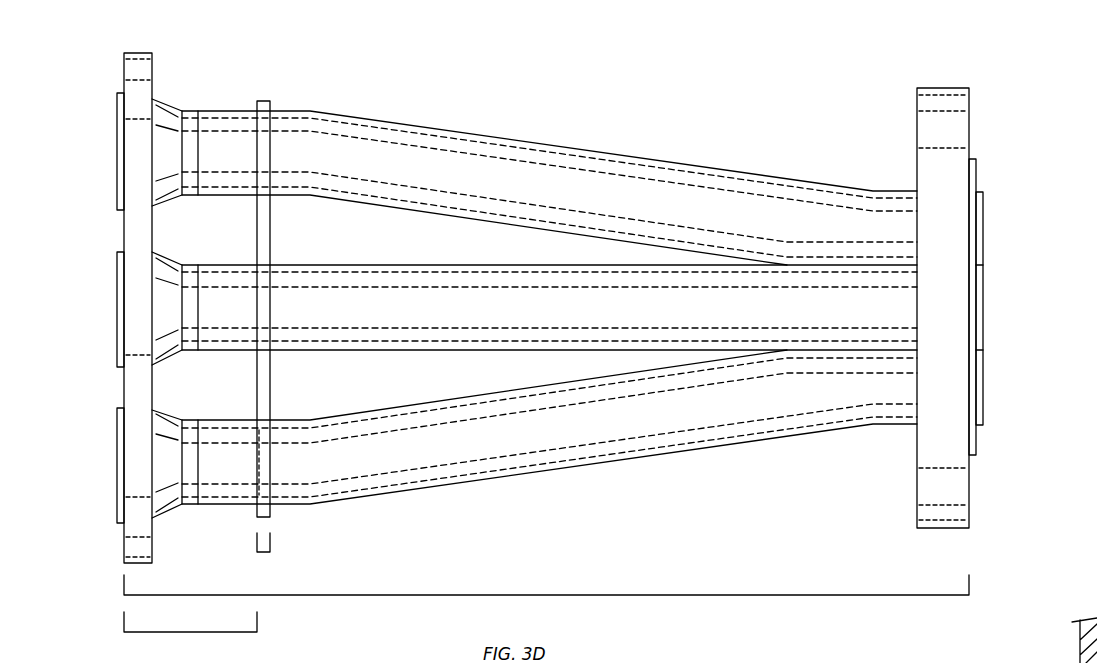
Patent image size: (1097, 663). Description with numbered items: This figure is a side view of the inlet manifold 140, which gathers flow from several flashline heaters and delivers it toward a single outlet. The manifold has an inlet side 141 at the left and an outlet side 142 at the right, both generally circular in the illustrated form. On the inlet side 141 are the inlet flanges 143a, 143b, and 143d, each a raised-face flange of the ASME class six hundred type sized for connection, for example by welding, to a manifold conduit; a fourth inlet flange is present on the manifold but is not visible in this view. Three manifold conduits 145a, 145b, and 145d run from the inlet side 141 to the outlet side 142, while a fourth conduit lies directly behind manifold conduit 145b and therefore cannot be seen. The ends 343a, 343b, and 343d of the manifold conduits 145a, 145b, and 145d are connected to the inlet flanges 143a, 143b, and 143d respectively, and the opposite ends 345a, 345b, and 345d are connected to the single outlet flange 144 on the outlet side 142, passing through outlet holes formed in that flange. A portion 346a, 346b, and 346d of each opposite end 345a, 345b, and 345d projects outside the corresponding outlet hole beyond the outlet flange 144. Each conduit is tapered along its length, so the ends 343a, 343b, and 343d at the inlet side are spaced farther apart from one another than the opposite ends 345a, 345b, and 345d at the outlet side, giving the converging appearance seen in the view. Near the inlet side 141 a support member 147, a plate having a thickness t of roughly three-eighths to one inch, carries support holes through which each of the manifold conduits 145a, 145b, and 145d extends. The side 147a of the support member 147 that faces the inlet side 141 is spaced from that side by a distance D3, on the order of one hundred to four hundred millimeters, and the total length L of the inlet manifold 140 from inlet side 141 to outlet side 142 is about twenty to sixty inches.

The inlet manifold 140 is at (612, 82).
The inlet side 141 is at (95, 85).
The outlet side 142 is at (985, 92).
The inlet flange 143a is at (140, 562).
The inlet flange 143b is at (138, 360).
The inlet flange 143d is at (150, 73).
The outlet flange 144 is at (927, 489).
The manifold conduit 145a is at (618, 438).
The manifold conduit 145b is at (618, 331).
The manifold conduit 145d is at (618, 168).
The support member 147 is at (270, 512).
The side of the support member 147a is at (255, 443).
The end of manifold conduit 343a is at (225, 503).
The end of manifold conduit 343b is at (233, 345).
The end of manifold conduit 343d is at (228, 182).
The opposite end of manifold conduit 345a is at (985, 398).
The opposite end of manifold conduit 345b is at (985, 314).
The opposite end of manifold conduit 345d is at (985, 233).
The portion of the opposite end 346a is at (985, 418).
The portion of the opposite end 346b is at (985, 334).
The portion of the opposite end 346d is at (985, 253).